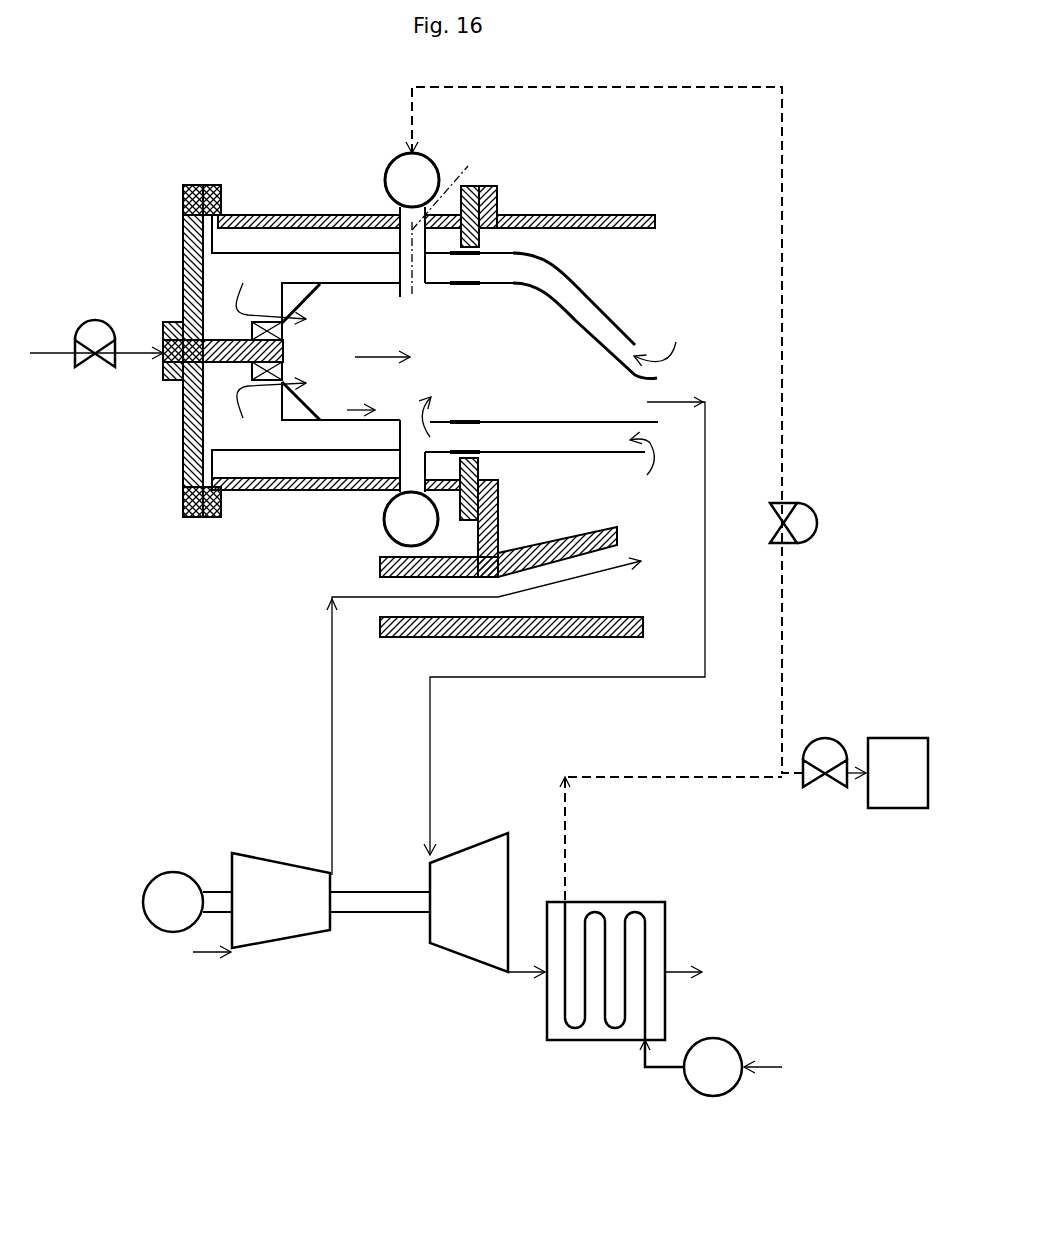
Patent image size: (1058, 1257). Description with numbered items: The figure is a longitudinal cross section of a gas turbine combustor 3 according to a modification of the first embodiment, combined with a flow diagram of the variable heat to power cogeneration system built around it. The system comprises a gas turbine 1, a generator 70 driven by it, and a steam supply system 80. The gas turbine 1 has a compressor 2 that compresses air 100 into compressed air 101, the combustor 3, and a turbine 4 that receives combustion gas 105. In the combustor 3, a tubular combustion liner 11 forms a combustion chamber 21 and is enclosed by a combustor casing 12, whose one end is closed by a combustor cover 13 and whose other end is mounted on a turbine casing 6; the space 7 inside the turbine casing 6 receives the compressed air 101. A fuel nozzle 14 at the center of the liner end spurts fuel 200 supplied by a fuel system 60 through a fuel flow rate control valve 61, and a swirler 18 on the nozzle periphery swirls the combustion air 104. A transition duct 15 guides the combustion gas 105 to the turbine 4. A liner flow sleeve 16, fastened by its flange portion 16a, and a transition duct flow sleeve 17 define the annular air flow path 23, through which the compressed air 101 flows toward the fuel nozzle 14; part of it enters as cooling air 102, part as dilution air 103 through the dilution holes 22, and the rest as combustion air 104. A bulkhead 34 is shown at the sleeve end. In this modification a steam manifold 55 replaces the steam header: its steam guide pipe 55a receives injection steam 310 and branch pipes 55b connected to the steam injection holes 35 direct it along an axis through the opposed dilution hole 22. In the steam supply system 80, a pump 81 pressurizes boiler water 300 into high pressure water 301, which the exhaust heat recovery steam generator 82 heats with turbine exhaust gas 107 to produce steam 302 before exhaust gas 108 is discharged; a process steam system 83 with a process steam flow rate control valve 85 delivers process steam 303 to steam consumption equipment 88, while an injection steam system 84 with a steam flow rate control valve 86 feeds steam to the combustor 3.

The gas turbine 1 is at (325, 942).
The compressor 2 is at (274, 882).
The combustor 3 is at (208, 155).
The turbine 4 is at (475, 862).
The turbine casing 6 is at (580, 216).
The casing interior space 7 is at (604, 262).
The combustion liner 11 is at (336, 285).
The combustor casing 12 is at (268, 490).
The combustor cover 13 is at (190, 518).
The fuel nozzle 14 is at (185, 382).
The transition duct 15 is at (572, 337).
The liner flow sleeve 16 is at (298, 252).
The flange portion 16a is at (188, 244).
The transition duct flow sleeve 17 is at (598, 312).
The swirler 18 is at (268, 322).
The combustion chamber 21 is at (339, 364).
The dilution hole 22 is at (425, 292).
The air flow path 23 is at (517, 279).
The bulkhead 34 is at (498, 230).
The steam injection hole 35 is at (402, 280).
The steam manifold 55 is at (380, 526).
The steam guide pipe 55a is at (395, 163).
The branch pipe 55b is at (398, 232).
The fuel system 60 is at (56, 345).
The fuel flow rate control valve 61 is at (95, 328).
The generator 70 is at (176, 872).
The steam supply system 80 is at (737, 910).
The pump 81 is at (725, 1040).
The exhaust heat recovery steam generator 82 is at (650, 902).
The process steam system 83 is at (790, 780).
The injection steam system 84 is at (785, 370).
The process steam flow rate control valve 85 is at (822, 750).
The steam flow rate control valve 86 is at (815, 524).
The steam consumption equipment 88 is at (895, 808).
The air 100 is at (208, 954).
The compressed air 101 is at (676, 342).
The cooling air 102 is at (342, 437).
The dilution air 103 is at (440, 402).
The combustion air 104 is at (265, 349).
The combustion gas 105 is at (366, 357).
The turbine exhaust gas 107 is at (518, 975).
The exhaust gas 108 is at (682, 970).
The fuel 200 is at (52, 356).
The boiler water 300 is at (775, 1066).
The high pressure water 301 is at (650, 1070).
The steam 302 is at (620, 775).
The process steam 303 is at (850, 788).
The injection steam 310 is at (418, 108).